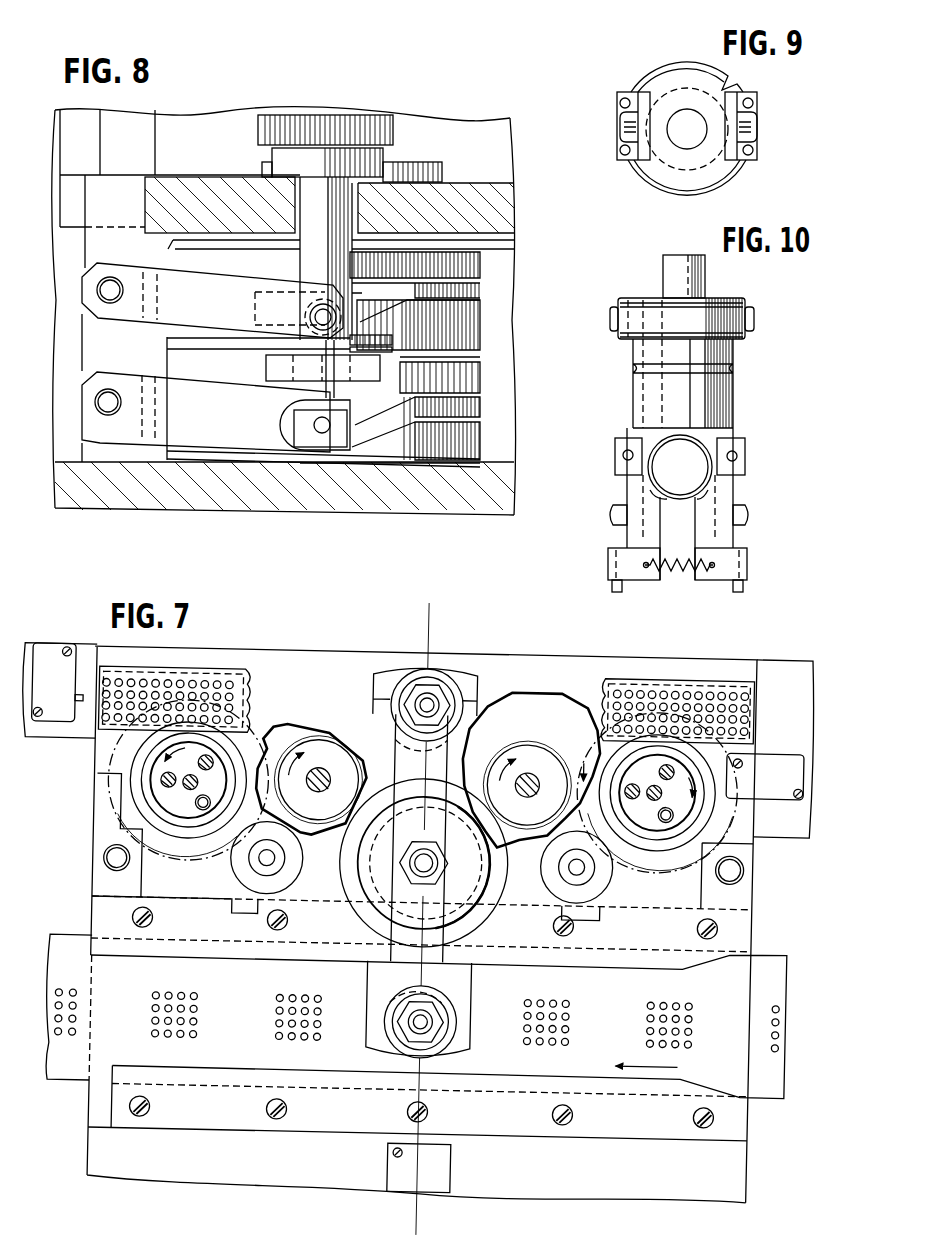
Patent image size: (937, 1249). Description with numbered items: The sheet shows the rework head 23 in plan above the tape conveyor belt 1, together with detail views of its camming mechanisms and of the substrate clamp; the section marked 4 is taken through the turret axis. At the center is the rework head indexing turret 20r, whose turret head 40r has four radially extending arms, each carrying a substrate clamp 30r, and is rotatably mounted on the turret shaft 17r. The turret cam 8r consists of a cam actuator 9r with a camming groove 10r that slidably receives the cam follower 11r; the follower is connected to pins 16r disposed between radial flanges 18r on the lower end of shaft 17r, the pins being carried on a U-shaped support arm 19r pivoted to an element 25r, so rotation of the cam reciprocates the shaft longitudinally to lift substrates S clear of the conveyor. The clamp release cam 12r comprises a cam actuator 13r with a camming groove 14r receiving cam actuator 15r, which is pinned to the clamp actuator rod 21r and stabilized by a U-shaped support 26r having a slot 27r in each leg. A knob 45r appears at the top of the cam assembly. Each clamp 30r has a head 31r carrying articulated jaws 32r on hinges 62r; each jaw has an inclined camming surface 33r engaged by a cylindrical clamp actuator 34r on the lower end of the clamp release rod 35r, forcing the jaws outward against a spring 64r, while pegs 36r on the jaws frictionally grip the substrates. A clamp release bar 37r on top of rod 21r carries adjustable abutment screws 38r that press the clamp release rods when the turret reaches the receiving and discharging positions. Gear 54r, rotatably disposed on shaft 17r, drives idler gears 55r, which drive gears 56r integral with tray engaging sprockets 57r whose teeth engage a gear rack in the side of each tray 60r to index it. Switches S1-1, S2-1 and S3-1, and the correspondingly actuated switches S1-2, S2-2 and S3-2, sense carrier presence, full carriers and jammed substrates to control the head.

In FIG. 7, the tape conveyor belt 1 is at (247, 1029).
In FIG. 7, the section line 4 is at (432, 613).
In FIG. 8, the turret cam 8r is at (492, 270).
In FIG. 8, the cam actuator 9r is at (472, 327).
In FIG. 8, the camming groove 10r is at (463, 290).
In FIG. 8, the cam follower 11r is at (356, 298).
In FIG. 8, the clamp release cam 12r is at (487, 434).
In FIG. 8, the cam actuator 13r is at (470, 440).
In FIG. 8, the camming groove 14r is at (463, 403).
In FIG. 8, the cam actuator 15r is at (342, 435).
In FIG. 8, the pins 16r is at (302, 314).
In FIG. 8, the turret shaft 17r is at (300, 262).
In FIG. 8, the radial flanges 18r is at (258, 292).
In FIG. 8, the U-shaped support arm 19r is at (207, 292).
In FIG. 7, the rework head indexing turret 20r is at (503, 938).
In FIG. 8, the clamp actuator rod 21r is at (305, 386).
In FIG. 7, the clamp actuator rod 21r is at (413, 860).
In FIG. 7, the rework head 23 is at (351, 642).
In FIG. 8, the element 25r is at (123, 350).
In FIG. 8, the U-shaped support 26r is at (199, 396).
In FIG. 8, the slot 27r is at (292, 425).
In FIG. 9, the substrate clamp 30r is at (768, 93).
In FIG. 10, the substrate clamp 30r is at (750, 376).
In FIG. 7, the substrate clamp 30r is at (453, 692).
In FIG. 10, the head 31r is at (640, 347).
In FIG. 9, the jaws 32r is at (618, 111).
In FIG. 10, the jaws 32r is at (736, 491).
In FIG. 10, the camming surface 33r is at (679, 510).
In FIG. 10, the clamp actuator 34r is at (696, 481).
In FIG. 9, the clamp release rod 35r is at (694, 118).
In FIG. 10, the clamp release rod 35r is at (688, 284).
In FIG. 9, the pegs 36r is at (619, 102).
In FIG. 10, the pegs 36r is at (611, 586).
In FIG. 7, the clamp release bar 37r is at (435, 764).
In FIG. 7, the adjustable abutment screws 38r is at (416, 702).
In FIG. 7, the turret head 40r is at (331, 915).
In FIG. 8, the adjusting knob 45r is at (356, 121).
In FIG. 7, the spur gear 54r is at (508, 862).
In FIG. 7, the idler gears 55r is at (327, 752).
In FIG. 7, the gears 56r is at (254, 746).
In FIG. 7, the tray engaging sprockets 57r is at (198, 832).
In FIG. 7, the tray 60r is at (253, 680).
In FIG. 10, the hinges 62r is at (616, 462).
In FIG. 10, the spring 64r is at (677, 585).
In FIG. 7, the substrates S is at (173, 998).
In FIG. 7, the normally-open switch S1-1 is at (765, 751).
In FIG. 7, the switch S1-2 is at (780, 765).
In FIG. 7, the normally-closed switch S2-1 is at (57, 721).
In FIG. 7, the switch S2-2 is at (53, 722).
In FIG. 7, the normally-closed switch S3-1 is at (436, 1168).
In FIG. 7, the switch S3-2 is at (448, 1160).